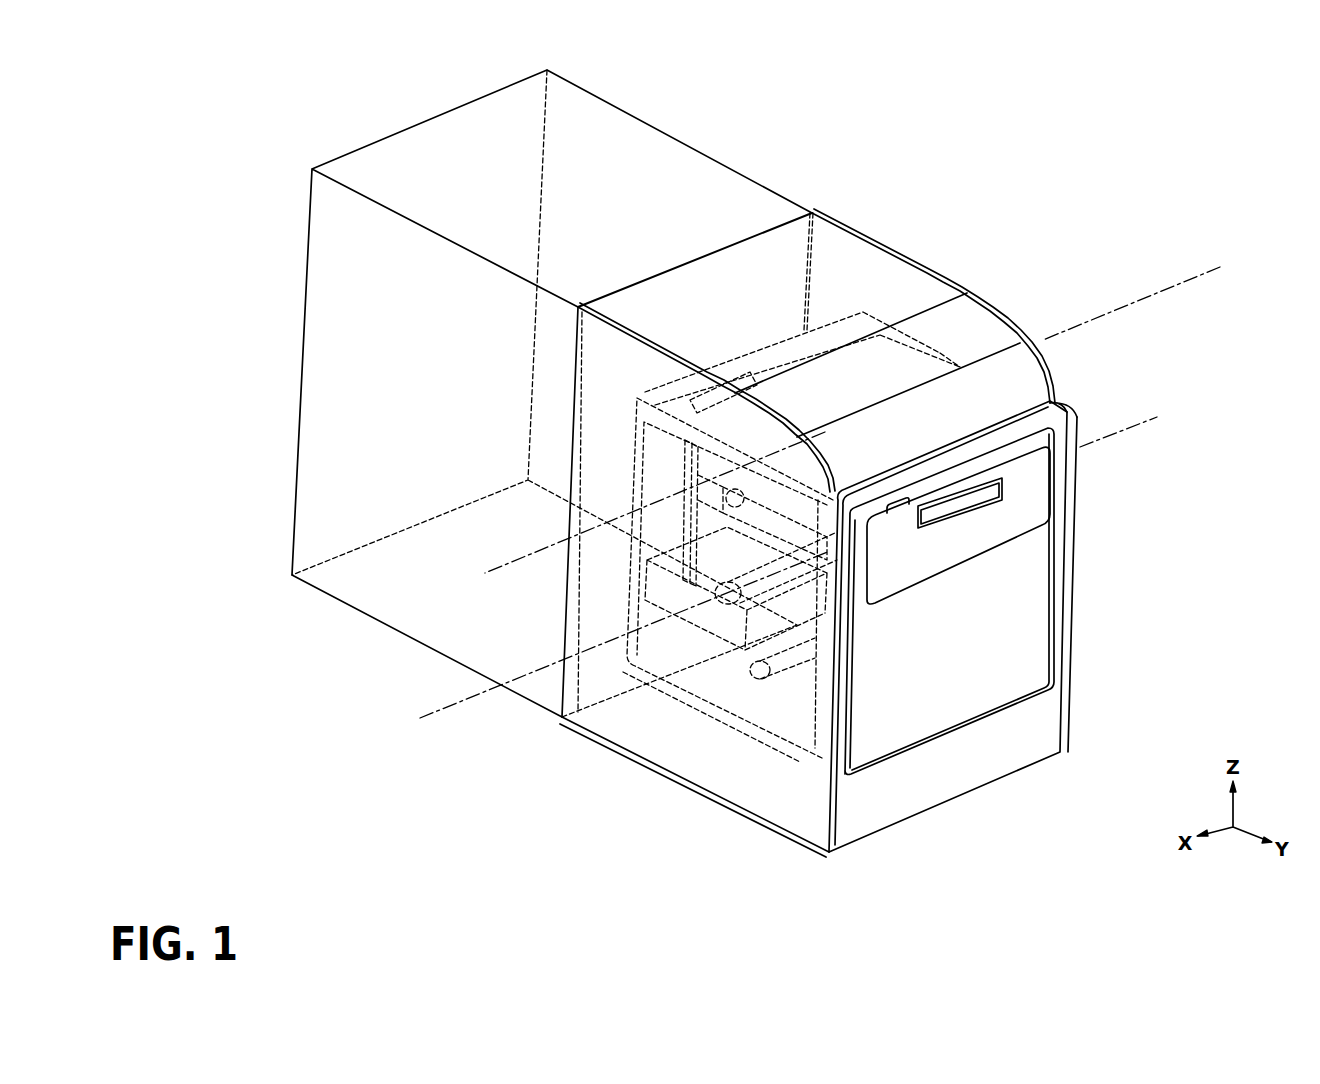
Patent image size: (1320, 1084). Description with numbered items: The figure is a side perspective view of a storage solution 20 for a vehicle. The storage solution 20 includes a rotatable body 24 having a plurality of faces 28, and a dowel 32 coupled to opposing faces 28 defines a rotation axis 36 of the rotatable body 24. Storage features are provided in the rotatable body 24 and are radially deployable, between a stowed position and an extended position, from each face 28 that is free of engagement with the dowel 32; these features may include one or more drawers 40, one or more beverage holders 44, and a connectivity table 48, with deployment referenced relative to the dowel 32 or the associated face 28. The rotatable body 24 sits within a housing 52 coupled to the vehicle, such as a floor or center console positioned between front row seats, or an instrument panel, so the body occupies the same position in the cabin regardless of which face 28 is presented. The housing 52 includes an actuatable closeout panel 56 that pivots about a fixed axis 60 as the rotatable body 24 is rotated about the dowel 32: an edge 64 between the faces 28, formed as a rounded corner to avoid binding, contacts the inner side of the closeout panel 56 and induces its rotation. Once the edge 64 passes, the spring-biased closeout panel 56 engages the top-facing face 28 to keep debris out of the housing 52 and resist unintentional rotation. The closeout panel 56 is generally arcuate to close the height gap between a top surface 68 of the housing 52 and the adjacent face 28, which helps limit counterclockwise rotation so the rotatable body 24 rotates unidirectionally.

The storage solution 20 is at (243, 193).
The rotatable body 24 is at (997, 592).
The faces 28 is at (1012, 315).
The dowel 32 is at (737, 597).
The rotation axis 36 is at (470, 703).
The drawers 40 is at (1008, 512).
The beverage holders 44 is at (683, 524).
The connectivity table 48 is at (817, 747).
The housing 52 is at (633, 152).
The closeout panel 56 is at (995, 403).
The fixed axis 60 is at (1150, 293).
The edge 64 is at (763, 347).
The top surface 68 is at (763, 253).